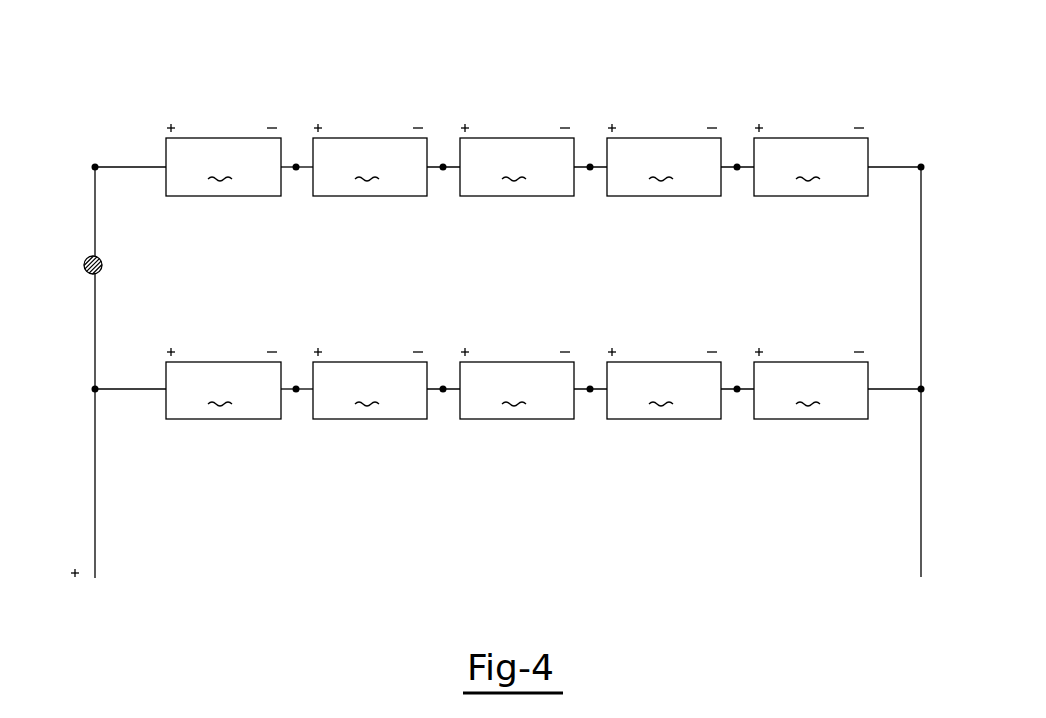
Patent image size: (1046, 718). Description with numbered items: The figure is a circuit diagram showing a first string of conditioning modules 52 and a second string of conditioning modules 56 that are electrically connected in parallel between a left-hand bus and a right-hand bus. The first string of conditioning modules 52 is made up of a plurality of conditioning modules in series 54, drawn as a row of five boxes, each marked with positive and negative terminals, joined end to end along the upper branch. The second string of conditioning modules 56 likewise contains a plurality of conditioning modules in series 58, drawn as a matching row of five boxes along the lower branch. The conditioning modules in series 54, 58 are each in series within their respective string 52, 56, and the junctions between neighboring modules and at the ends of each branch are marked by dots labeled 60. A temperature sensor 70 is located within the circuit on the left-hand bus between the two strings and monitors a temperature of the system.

The first string of conditioning modules 52 is at (88, 161).
The conditioning modules in series 54 is at (517, 160).
The second string of conditioning modules 56 is at (87, 384).
The conditioning modules in series 58 is at (517, 383).
The connection node 60 is at (520, 289).
The temperature sensor 70 is at (102, 263).